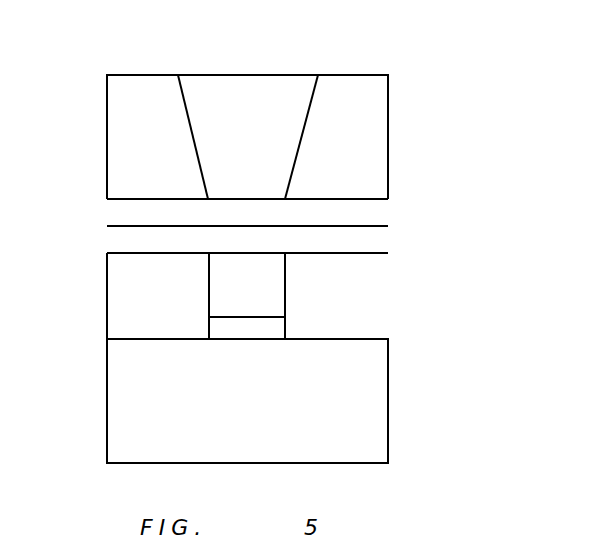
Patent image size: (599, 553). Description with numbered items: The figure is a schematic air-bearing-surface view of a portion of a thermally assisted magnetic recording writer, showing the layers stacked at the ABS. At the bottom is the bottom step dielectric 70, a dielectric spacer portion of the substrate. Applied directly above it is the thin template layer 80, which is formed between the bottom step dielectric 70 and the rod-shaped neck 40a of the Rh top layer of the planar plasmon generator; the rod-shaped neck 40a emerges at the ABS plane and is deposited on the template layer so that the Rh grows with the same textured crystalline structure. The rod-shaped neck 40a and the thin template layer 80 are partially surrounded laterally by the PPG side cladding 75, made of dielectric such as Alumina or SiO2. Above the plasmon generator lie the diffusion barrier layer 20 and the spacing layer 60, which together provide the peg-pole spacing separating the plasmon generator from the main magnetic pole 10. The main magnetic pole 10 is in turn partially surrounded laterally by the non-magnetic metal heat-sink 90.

The main magnetic pole 10 is at (248, 90).
The heat-sink for the main magnetic pole 90 is at (128, 151).
The diffusion barrier layer 20 is at (377, 210).
The peg-pole spacing layer 60 is at (377, 237).
The PPG side cladding 75 is at (128, 296).
The rod-shaped neck of the Rh top layer 40a is at (273, 290).
The thin template layer 80 is at (273, 326).
The bottom step dielectric 70 is at (376, 403).